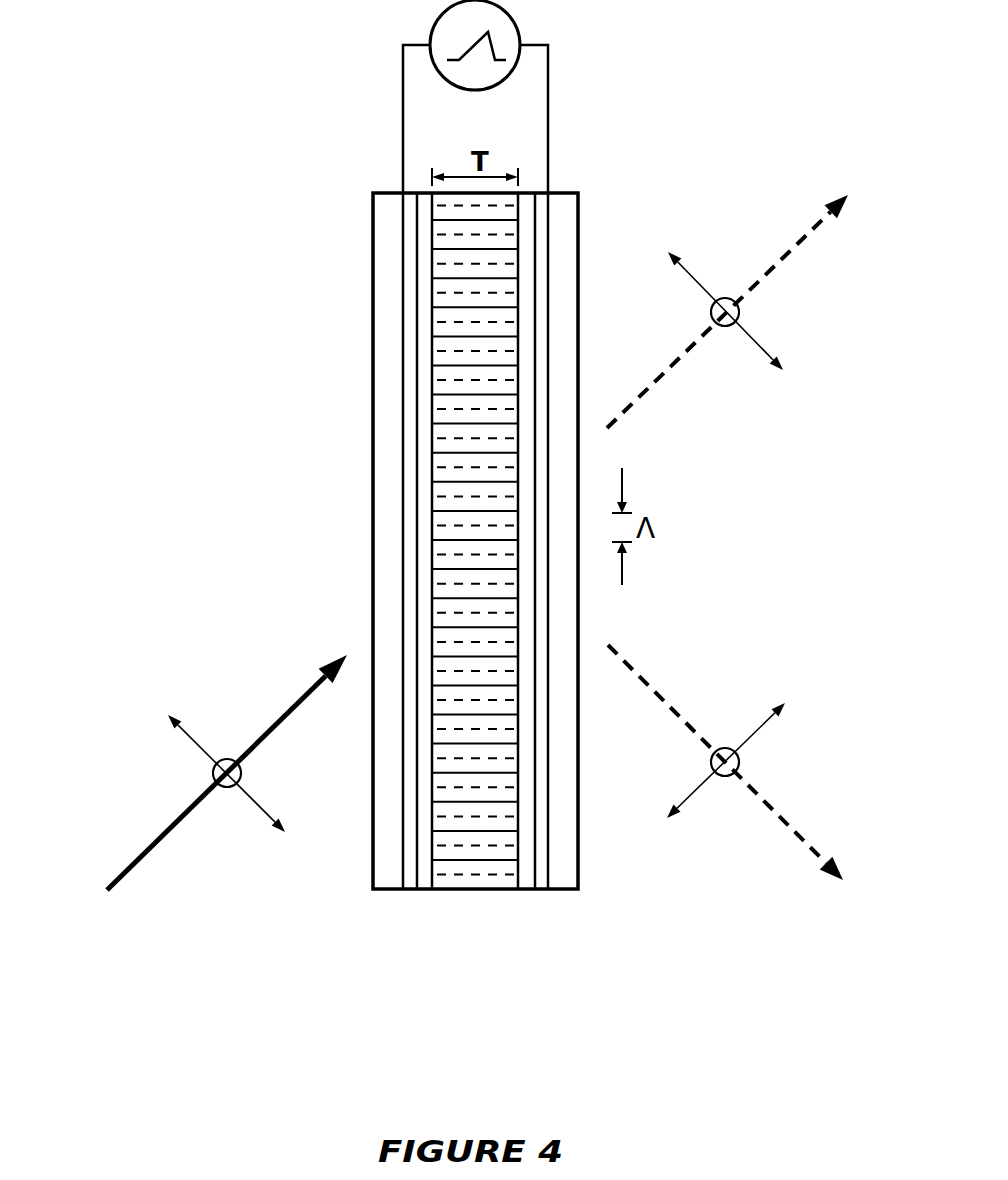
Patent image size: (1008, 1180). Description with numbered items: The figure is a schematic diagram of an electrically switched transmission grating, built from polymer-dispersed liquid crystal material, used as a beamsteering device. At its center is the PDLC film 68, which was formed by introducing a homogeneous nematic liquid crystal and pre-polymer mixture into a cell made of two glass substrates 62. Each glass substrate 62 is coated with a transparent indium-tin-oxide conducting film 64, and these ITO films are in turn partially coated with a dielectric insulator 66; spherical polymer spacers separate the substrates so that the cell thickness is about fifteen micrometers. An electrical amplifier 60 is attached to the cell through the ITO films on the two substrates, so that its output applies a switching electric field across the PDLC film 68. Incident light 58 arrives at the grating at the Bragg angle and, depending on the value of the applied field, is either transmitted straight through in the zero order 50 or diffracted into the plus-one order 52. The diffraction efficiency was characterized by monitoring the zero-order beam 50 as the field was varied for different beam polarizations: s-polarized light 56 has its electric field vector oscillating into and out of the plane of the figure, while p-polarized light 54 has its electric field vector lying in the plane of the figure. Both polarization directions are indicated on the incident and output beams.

The m=0 order beam 50 is at (751, 292).
The m=+1 order beam 52 is at (752, 783).
The p-polarized light 54 is at (468, 542).
The s-polarized light 56 is at (740, 306).
The incident light 58 is at (227, 749).
The electrical amplifier 60 is at (489, 96).
The glass substrate 62 is at (387, 830).
The indium-tin-oxide conducting film 64 is at (410, 843).
The dielectric insulator 66 is at (424, 840).
The PDLC film 68 is at (475, 540).